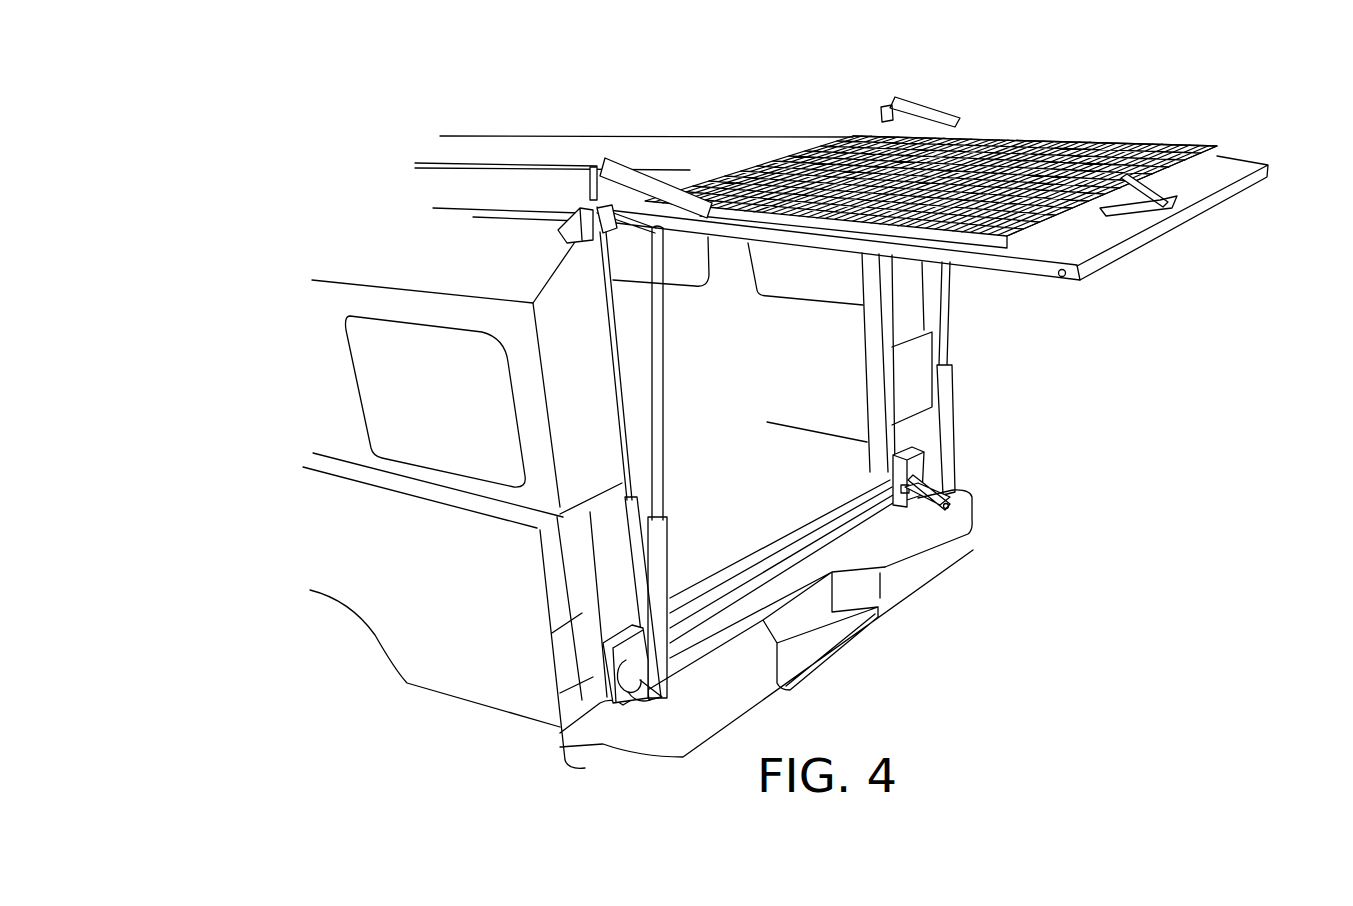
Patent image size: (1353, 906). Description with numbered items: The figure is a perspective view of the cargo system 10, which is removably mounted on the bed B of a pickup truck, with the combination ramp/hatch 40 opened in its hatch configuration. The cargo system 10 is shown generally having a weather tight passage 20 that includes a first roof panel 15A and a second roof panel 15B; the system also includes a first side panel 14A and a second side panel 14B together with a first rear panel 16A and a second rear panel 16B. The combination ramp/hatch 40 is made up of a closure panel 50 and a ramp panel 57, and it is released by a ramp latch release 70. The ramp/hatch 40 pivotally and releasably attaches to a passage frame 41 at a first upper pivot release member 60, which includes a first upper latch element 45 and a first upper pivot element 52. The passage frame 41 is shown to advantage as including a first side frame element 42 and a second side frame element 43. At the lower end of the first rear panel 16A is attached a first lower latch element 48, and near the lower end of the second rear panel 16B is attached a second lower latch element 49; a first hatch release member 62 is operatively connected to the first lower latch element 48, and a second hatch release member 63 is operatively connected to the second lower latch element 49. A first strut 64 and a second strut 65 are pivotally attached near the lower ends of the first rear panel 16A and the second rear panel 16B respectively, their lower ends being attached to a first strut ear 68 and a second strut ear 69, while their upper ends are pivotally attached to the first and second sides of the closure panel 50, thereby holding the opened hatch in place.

The cargo system 10 is at (540, 112).
The weather tight passage 20 is at (770, 125).
The combination ramp/hatch 40 is at (1108, 118).
The closure panel 50 is at (1268, 165).
The ramp panel 57 is at (1197, 146).
The ramp latch release 70 is at (1148, 218).
The first roof panel 15A is at (456, 191).
The second roof panel 15B is at (618, 148).
The first upper pivot release member 60 is at (583, 194).
The first upper pivot element 52 is at (556, 231).
The first upper latch element 45 is at (592, 213).
The first side frame element 42 is at (623, 400).
The first strut 64 is at (670, 417).
The second side frame element 43 is at (866, 335).
The passage frame 41 is at (860, 394).
The second strut 65 is at (953, 394).
The second lower latch element 49 is at (893, 470).
The second hatch release member 63 is at (927, 483).
The second strut ear 69 is at (928, 510).
The first lower latch element 48 is at (620, 627).
The first hatch release member 62 is at (603, 703).
The first strut ear 68 is at (640, 710).
The first side panel 14A is at (345, 445).
The second side panel 14B is at (729, 262).
The first rear panel 16A is at (560, 296).
The second rear panel 16B is at (907, 313).
The bed B is at (418, 663).